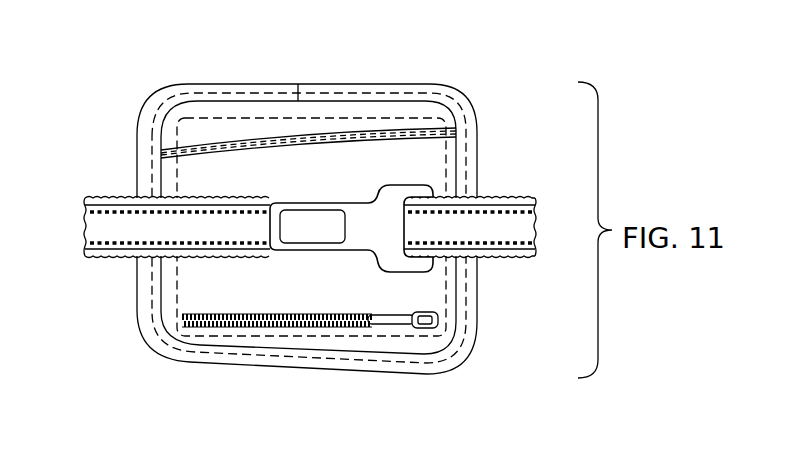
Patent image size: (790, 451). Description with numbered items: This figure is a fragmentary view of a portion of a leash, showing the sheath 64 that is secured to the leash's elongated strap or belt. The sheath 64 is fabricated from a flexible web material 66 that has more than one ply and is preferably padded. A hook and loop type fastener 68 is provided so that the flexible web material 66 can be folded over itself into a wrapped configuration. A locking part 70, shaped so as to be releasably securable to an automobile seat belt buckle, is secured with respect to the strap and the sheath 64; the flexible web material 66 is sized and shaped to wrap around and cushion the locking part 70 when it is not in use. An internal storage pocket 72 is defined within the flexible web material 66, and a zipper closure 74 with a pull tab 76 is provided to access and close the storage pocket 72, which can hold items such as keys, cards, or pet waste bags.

The sheath 64 is at (122, 108).
The flexible web material 66 is at (236, 158).
The hook and loop type fastener 68 is at (348, 112).
The locking part 70 is at (268, 230).
The internal storage pocket 72 is at (176, 288).
The zipper closure 74 is at (260, 328).
The pull tab 76 is at (388, 323).